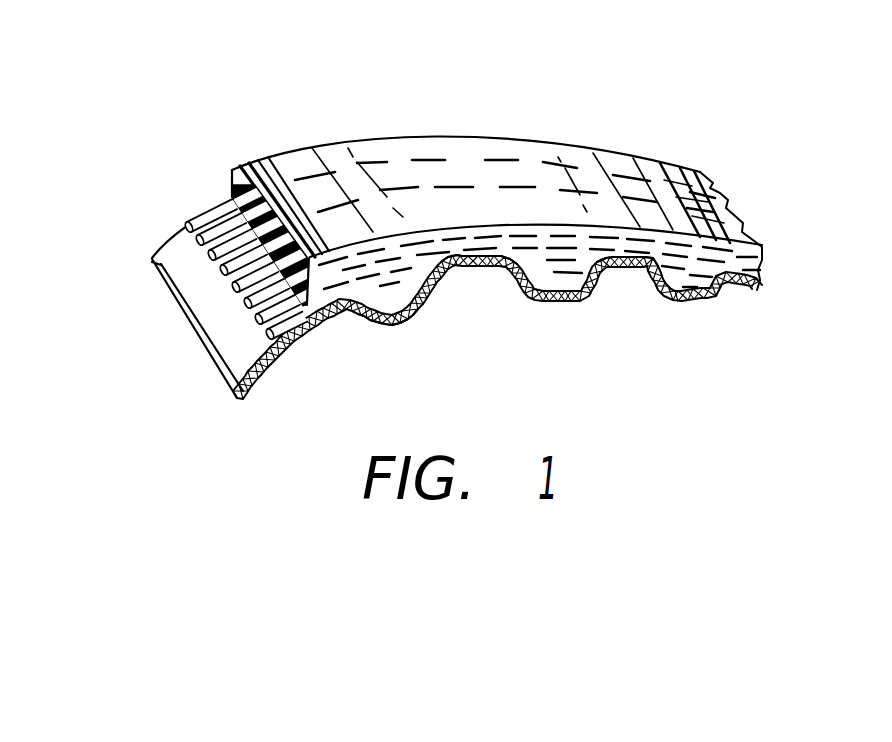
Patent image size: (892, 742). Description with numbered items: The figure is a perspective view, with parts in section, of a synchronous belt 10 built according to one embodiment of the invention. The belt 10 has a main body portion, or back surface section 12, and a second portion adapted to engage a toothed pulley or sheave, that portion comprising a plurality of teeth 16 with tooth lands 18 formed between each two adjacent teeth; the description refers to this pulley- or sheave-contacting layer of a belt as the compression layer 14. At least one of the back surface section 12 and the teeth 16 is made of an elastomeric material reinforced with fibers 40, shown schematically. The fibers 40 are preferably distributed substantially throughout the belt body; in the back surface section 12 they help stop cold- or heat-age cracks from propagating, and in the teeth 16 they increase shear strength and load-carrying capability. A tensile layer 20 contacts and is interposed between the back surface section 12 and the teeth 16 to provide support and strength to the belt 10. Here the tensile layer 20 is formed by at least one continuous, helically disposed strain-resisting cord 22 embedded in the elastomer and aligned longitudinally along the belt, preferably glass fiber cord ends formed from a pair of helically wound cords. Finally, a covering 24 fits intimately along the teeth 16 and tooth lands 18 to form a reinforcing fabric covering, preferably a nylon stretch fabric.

The synchronous belt 10 is at (290, 128).
The back surface section 12 is at (457, 175).
The compression layer 14 is at (395, 287).
The teeth 16 is at (408, 298).
The tooth lands 18 is at (477, 272).
The tensile layer 20 is at (197, 212).
The strain-resisting cord 22 is at (223, 265).
The covering 24 is at (651, 270).
The reinforcement fibers 40 is at (515, 187).